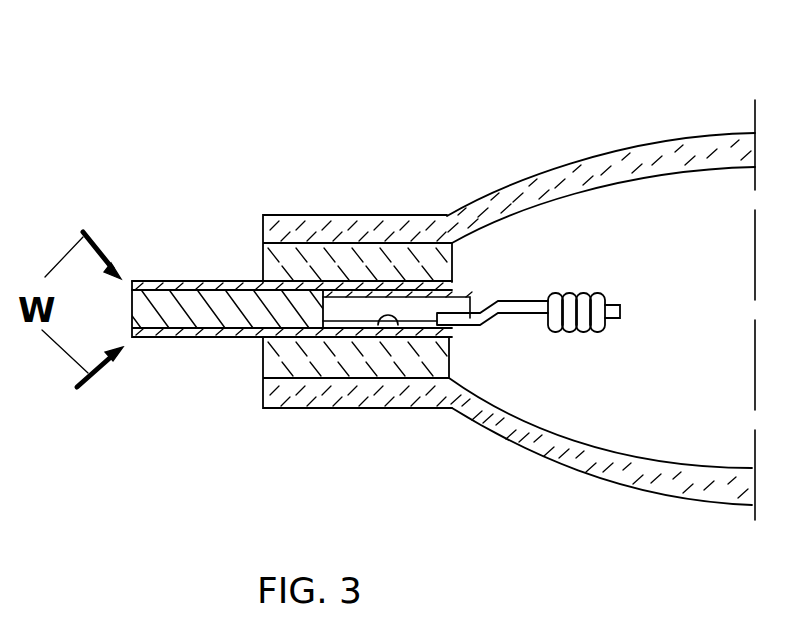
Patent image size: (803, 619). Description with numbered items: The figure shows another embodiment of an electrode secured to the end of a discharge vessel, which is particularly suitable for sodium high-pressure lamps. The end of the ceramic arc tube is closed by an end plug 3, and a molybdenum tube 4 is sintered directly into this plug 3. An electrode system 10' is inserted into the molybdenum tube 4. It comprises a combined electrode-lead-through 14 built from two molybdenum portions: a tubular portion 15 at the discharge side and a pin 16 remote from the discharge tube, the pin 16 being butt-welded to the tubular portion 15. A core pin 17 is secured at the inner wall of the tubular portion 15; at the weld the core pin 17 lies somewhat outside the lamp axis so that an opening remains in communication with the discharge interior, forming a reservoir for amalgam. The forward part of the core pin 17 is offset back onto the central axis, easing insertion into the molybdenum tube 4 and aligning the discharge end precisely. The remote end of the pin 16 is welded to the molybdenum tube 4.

The end plug 3 is at (315, 282).
The molybdenum tube 4 is at (173, 337).
The electrode system 10' is at (601, 300).
The combined electrode-lead-through 14 is at (233, 302).
The tubular portion 15 is at (398, 337).
The pin 16 is at (173, 281).
The core pin 17 is at (505, 325).